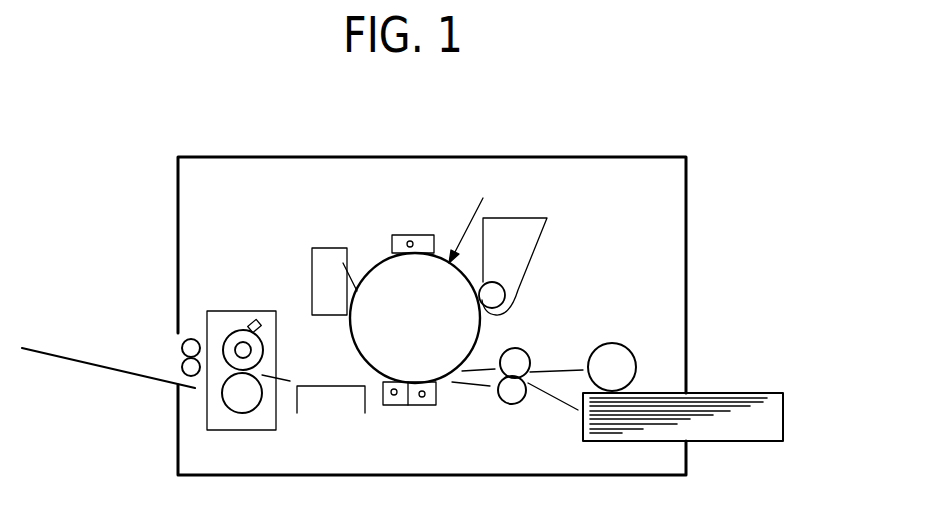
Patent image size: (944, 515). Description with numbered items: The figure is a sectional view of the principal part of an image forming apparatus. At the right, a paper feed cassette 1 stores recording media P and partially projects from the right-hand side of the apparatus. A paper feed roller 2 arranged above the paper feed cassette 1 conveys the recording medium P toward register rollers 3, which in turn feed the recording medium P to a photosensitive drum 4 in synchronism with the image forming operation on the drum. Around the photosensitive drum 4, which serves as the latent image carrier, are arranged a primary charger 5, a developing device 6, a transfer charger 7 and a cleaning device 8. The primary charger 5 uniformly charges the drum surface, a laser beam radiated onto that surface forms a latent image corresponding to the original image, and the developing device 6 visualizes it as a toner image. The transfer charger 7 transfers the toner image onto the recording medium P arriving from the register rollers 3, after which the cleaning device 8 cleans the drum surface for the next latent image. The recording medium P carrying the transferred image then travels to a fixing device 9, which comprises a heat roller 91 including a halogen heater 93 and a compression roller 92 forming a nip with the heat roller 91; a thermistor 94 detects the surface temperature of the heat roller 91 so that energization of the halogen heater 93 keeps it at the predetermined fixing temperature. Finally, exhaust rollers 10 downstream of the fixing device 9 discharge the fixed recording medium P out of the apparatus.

The paper feed cassette 1 is at (762, 442).
The recording medium P is at (763, 395).
The paper feed roller 2 is at (627, 353).
The register rollers 3 is at (512, 405).
The photosensitive drum 4 is at (378, 268).
The primary charger 5 is at (427, 237).
The developing device 6 is at (542, 225).
The transfer charger 7 is at (429, 407).
The cleaning device 8 is at (323, 246).
The fixing device 9 is at (276, 430).
The heat roller 91 is at (264, 349).
The compression roller 92 is at (230, 413).
The halogen heater 93 is at (237, 332).
The thermistor 94 is at (256, 322).
The exhaust rollers 10 is at (180, 345).